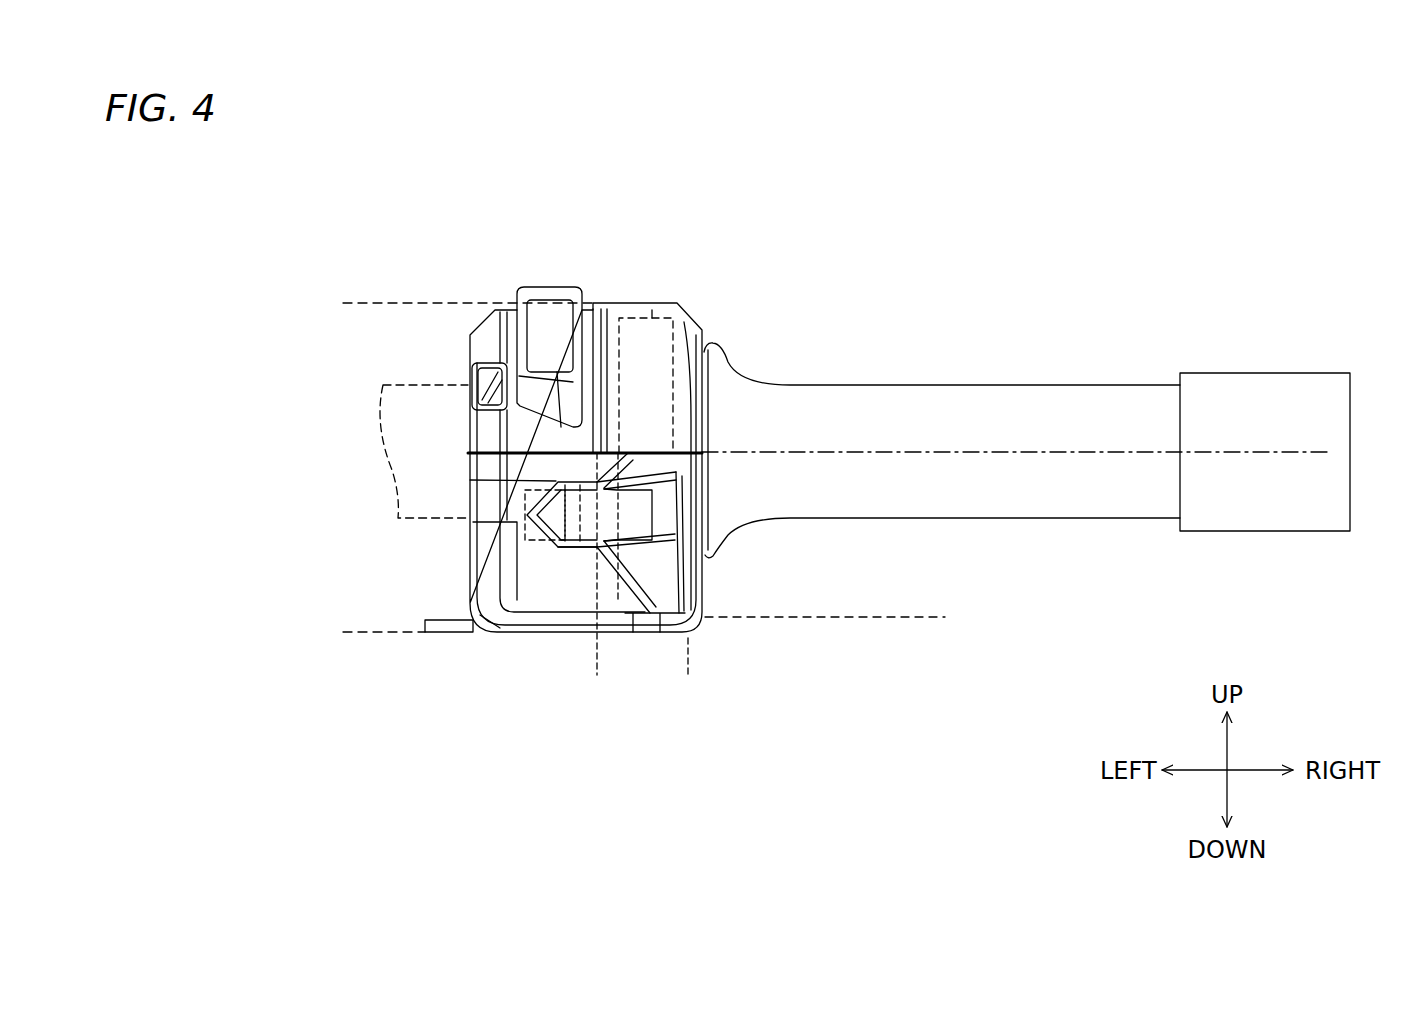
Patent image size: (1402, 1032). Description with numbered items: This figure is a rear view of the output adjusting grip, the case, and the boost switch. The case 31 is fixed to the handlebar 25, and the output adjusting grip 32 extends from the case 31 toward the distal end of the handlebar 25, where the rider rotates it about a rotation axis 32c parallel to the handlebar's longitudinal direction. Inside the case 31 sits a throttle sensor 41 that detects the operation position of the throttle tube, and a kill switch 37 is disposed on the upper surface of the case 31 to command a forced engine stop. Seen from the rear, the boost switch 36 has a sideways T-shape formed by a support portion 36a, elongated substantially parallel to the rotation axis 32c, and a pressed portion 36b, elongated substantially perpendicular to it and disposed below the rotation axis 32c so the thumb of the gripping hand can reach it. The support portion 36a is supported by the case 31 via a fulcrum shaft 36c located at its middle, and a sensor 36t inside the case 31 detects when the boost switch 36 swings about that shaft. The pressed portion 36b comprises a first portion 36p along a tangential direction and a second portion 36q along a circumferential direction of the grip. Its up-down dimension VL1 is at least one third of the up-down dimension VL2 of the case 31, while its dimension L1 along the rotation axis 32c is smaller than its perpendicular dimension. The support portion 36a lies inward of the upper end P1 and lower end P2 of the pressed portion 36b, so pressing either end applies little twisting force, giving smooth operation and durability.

The handlebar 25 is at (415, 383).
The case 31 is at (601, 308).
The output adjusting grip 32 is at (955, 405).
The rotation axis 32c is at (1073, 450).
The boost switch 36 is at (583, 578).
The support portion 36a is at (580, 557).
The pressed portion 36b is at (812, 477).
The fulcrum shaft 36c is at (470, 484).
The first portion 36p is at (725, 455).
The second portion 36q is at (725, 563).
The sensor 36t is at (560, 568).
The kill switch 37 is at (543, 290).
The throttle sensor 41 is at (658, 302).
The upper end P1 is at (630, 453).
The lower end P2 is at (672, 636).
The dimension in direction along rotation axis L1 is at (688, 663).
The dimension of pressed portion in up-down direction VL1 is at (922, 453).
The dimension of case in up-down direction VL2 is at (369, 303).